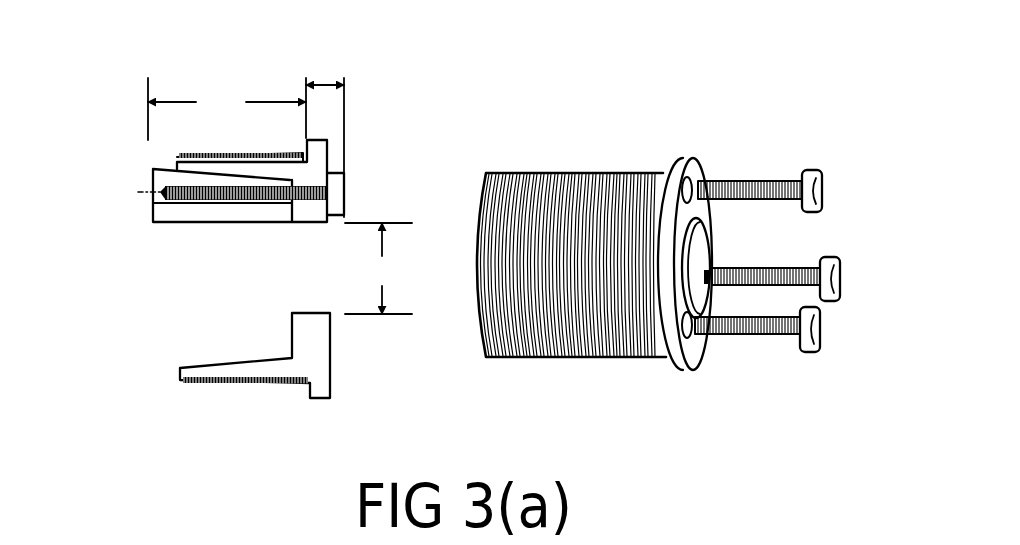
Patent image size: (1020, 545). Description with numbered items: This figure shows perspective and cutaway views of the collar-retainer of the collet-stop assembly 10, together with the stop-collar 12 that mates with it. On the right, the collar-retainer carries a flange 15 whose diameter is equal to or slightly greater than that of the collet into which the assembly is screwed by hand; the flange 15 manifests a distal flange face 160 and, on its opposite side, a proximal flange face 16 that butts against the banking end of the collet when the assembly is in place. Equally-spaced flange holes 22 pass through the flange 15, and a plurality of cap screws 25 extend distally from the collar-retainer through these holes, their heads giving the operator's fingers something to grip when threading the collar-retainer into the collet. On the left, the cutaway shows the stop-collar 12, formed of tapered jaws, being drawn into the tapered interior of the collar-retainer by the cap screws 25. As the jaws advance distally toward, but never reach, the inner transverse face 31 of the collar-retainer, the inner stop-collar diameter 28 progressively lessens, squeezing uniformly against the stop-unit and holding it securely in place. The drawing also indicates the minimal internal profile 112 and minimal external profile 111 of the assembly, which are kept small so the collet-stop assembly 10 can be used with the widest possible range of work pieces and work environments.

The collet-stop assembly 10 is at (393, 391).
The stop-collar 12 is at (167, 182).
The proximal flange face 16 is at (310, 393).
The inner transverse face 31 is at (288, 180).
The inner stop-collar diameter 28 is at (378, 268).
The external profile 111 is at (325, 75).
The internal profile 112 is at (227, 109).
The flange 15 is at (680, 367).
The flange holes 22 is at (690, 180).
The distal flange face 160 is at (698, 208).
The cap screws 25 is at (822, 192).